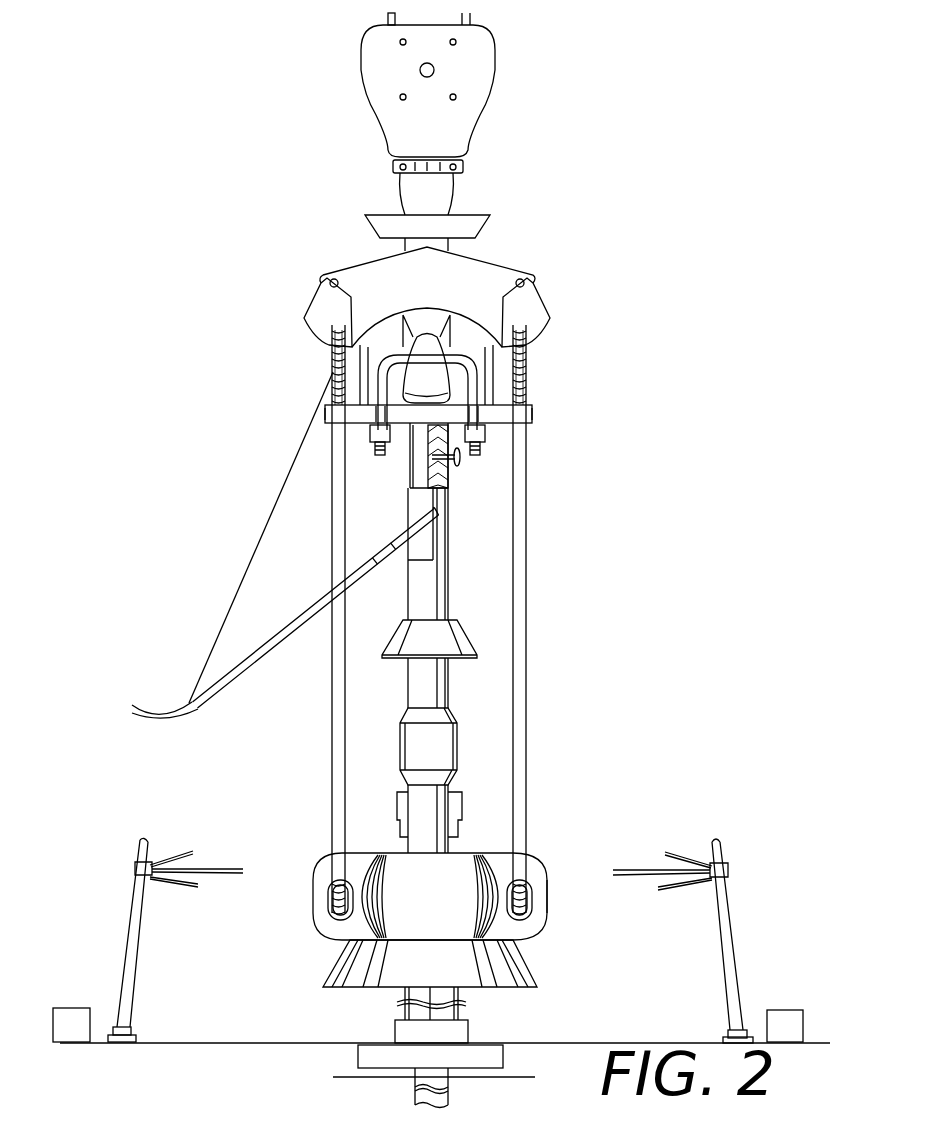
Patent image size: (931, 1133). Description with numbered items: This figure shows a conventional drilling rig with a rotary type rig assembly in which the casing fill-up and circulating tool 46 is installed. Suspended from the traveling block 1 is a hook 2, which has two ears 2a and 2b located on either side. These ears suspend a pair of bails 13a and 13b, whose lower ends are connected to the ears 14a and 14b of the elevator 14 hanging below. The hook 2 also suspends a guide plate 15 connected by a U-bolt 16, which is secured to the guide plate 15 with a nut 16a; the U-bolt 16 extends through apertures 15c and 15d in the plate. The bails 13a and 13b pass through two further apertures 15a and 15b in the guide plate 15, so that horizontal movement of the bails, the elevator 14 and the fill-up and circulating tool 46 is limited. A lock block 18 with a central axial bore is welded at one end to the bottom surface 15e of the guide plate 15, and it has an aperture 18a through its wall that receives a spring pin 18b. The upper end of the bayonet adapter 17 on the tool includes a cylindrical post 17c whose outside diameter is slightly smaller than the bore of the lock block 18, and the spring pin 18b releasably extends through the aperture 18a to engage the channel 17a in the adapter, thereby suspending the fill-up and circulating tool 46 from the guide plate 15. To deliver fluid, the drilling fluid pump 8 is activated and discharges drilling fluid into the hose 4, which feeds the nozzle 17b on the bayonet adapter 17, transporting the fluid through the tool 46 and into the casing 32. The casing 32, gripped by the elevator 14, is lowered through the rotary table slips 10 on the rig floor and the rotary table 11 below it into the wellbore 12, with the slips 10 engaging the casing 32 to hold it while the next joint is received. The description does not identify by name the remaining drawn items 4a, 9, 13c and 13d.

The traveling block 1 is at (467, 128).
The hook 2 is at (512, 258).
The ear 2a is at (317, 331).
The ear 2b is at (533, 333).
The hose 4 is at (92, 1022).
The right support leg 4a is at (765, 1022).
The drilling fluid pump 8 is at (67, 1023).
The right anchor block 9 is at (800, 1012).
The rotary table slips 10 is at (469, 1036).
The rotary table 11 is at (503, 1057).
The wellbore 12 is at (417, 1105).
The bail 13a is at (332, 477).
The bail 13b is at (518, 687).
The left rod loop 13c is at (325, 868).
The right rod loop 13d is at (545, 866).
The elevator 14 is at (543, 941).
The ear 14a is at (340, 938).
The ear 14b is at (559, 893).
The guide plate 15 is at (538, 423).
The aperture 15a is at (325, 405).
The aperture 15b is at (532, 427).
The aperture 15c is at (378, 410).
The aperture 15d is at (478, 417).
The bottom surface 15e is at (481, 452).
The U-bolt 16 is at (478, 372).
The nut 16a is at (367, 440).
The bayonet adapter 17 is at (451, 603).
The channel 17a is at (449, 466).
The nozzle 17b is at (407, 537).
The cylindrical post 17c is at (428, 488).
The lock block 18 is at (410, 458).
The aperture 18a is at (448, 484).
The spring pin 18b is at (461, 460).
The casing 32 is at (459, 808).
The fill-up and circulating tool 46 is at (464, 750).